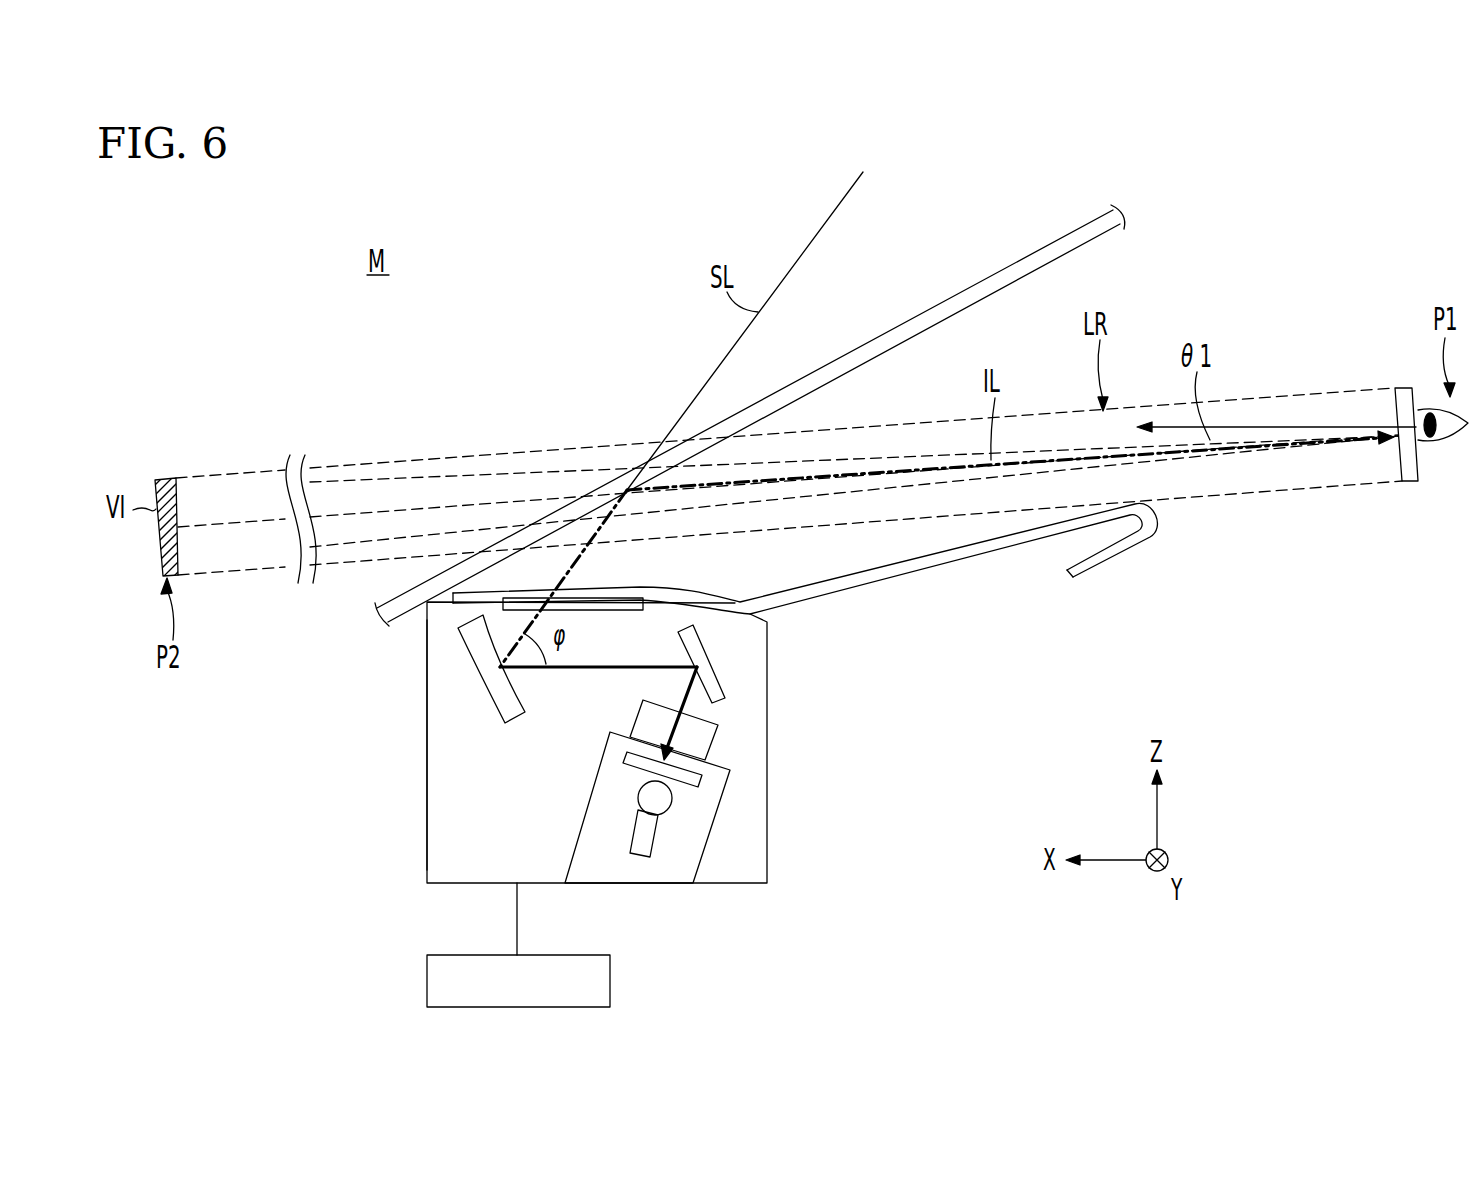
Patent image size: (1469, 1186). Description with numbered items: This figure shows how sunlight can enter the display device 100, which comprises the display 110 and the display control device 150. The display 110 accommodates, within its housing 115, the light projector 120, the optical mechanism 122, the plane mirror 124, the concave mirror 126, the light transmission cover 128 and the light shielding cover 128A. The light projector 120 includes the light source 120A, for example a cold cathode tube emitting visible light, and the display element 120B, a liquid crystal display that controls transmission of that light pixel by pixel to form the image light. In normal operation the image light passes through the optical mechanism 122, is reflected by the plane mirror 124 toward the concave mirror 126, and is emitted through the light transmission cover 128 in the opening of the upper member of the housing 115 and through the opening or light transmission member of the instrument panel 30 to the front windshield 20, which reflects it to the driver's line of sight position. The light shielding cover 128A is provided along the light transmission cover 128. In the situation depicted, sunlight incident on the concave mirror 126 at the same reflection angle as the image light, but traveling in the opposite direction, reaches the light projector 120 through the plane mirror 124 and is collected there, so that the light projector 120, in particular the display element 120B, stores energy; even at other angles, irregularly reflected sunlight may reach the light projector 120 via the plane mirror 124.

The front windshield 20 is at (920, 312).
The instrument panel 30 is at (963, 558).
The display device 100 is at (333, 651).
The display 110 is at (782, 633).
The housing 115 is at (427, 697).
The light projector 120 is at (595, 776).
The light source 120A is at (652, 842).
The display element 120B is at (717, 787).
The optical mechanism 122 is at (707, 745).
The plane mirror 124 is at (727, 678).
The concave mirror 126 is at (490, 693).
The light transmission cover 128 is at (655, 576).
The light shielding cover 128A is at (650, 600).
The display control device 150 is at (545, 955).